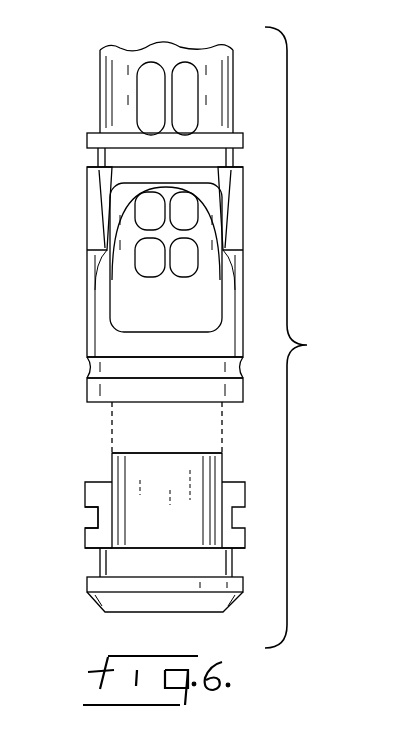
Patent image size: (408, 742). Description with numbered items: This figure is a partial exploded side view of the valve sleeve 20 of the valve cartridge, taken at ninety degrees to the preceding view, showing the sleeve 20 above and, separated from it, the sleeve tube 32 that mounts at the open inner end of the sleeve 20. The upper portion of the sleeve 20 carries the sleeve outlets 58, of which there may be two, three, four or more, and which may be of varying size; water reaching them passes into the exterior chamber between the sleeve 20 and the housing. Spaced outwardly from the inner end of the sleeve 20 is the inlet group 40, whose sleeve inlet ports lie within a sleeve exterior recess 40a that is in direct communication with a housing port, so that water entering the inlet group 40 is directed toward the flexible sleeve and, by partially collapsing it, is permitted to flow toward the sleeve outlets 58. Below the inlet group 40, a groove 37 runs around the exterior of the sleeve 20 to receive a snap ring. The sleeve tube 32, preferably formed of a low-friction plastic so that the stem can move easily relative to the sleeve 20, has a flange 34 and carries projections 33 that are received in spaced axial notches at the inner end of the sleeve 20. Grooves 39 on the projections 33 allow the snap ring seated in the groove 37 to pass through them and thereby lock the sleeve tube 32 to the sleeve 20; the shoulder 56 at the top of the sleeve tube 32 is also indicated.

The valve sleeve 20 is at (105, 87).
The sleeve outlets 58 is at (186, 74).
The inlet group 40 is at (176, 260).
The sleeve exterior recess 40a is at (128, 317).
The groove 37 is at (193, 370).
The shoulder 56 is at (125, 452).
The sleeve tube 32 is at (215, 464).
The projections 33 is at (85, 490).
The grooves 39 is at (96, 517).
The flange 34 is at (87, 583).